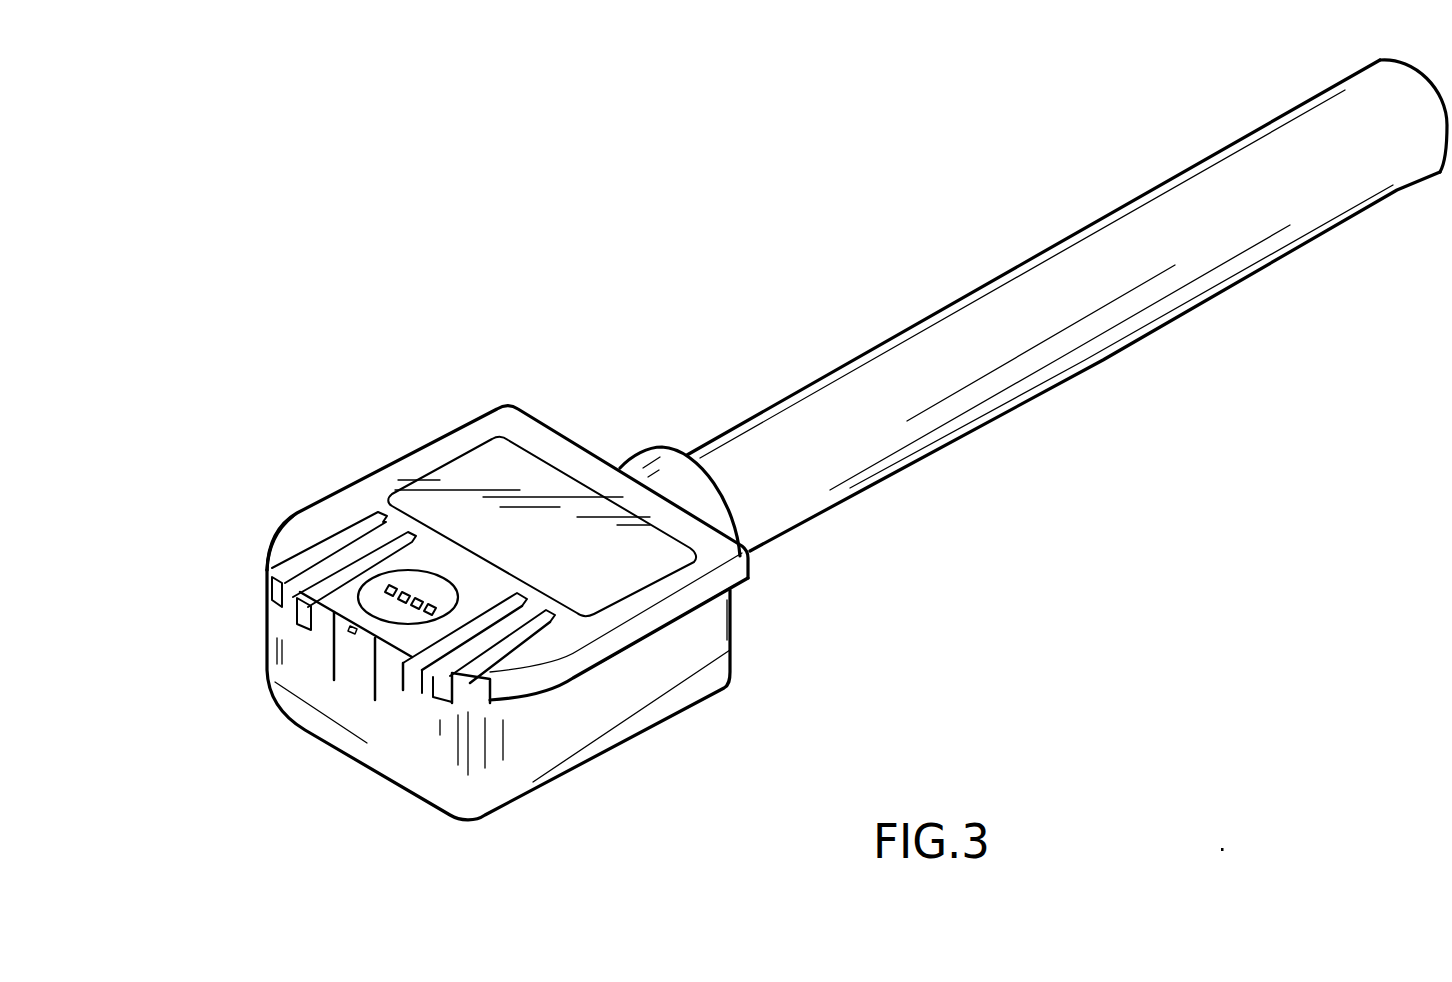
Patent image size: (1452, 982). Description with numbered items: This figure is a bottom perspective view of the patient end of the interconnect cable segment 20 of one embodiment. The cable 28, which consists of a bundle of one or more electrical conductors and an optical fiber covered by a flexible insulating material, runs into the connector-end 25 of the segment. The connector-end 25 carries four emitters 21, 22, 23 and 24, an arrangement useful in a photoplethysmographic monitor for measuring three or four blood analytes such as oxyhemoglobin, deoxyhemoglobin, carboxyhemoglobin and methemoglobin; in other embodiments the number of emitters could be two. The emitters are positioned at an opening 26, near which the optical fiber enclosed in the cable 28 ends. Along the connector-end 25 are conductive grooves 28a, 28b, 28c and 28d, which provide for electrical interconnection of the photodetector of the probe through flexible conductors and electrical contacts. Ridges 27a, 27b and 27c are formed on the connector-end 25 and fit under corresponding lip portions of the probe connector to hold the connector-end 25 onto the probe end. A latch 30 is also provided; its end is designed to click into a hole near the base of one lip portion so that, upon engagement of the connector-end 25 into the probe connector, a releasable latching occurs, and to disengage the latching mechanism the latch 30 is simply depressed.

The interconnect cable segment 20 is at (767, 640).
The emitter 21 is at (387, 584).
The emitter 22 is at (404, 597).
The emitter 23 is at (417, 603).
The emitter 24 is at (430, 609).
The connector-end 25 is at (525, 720).
The opening 26 is at (376, 612).
The ridge 27a is at (618, 640).
The ridge 27b is at (293, 514).
The ridge 27c is at (572, 447).
The cable 28 is at (1034, 256).
The conductive groove 28a is at (442, 695).
The conductive groove 28b is at (413, 683).
The conductive groove 28c is at (298, 613).
The conductive groove 28d is at (272, 578).
The latch 30 is at (350, 683).